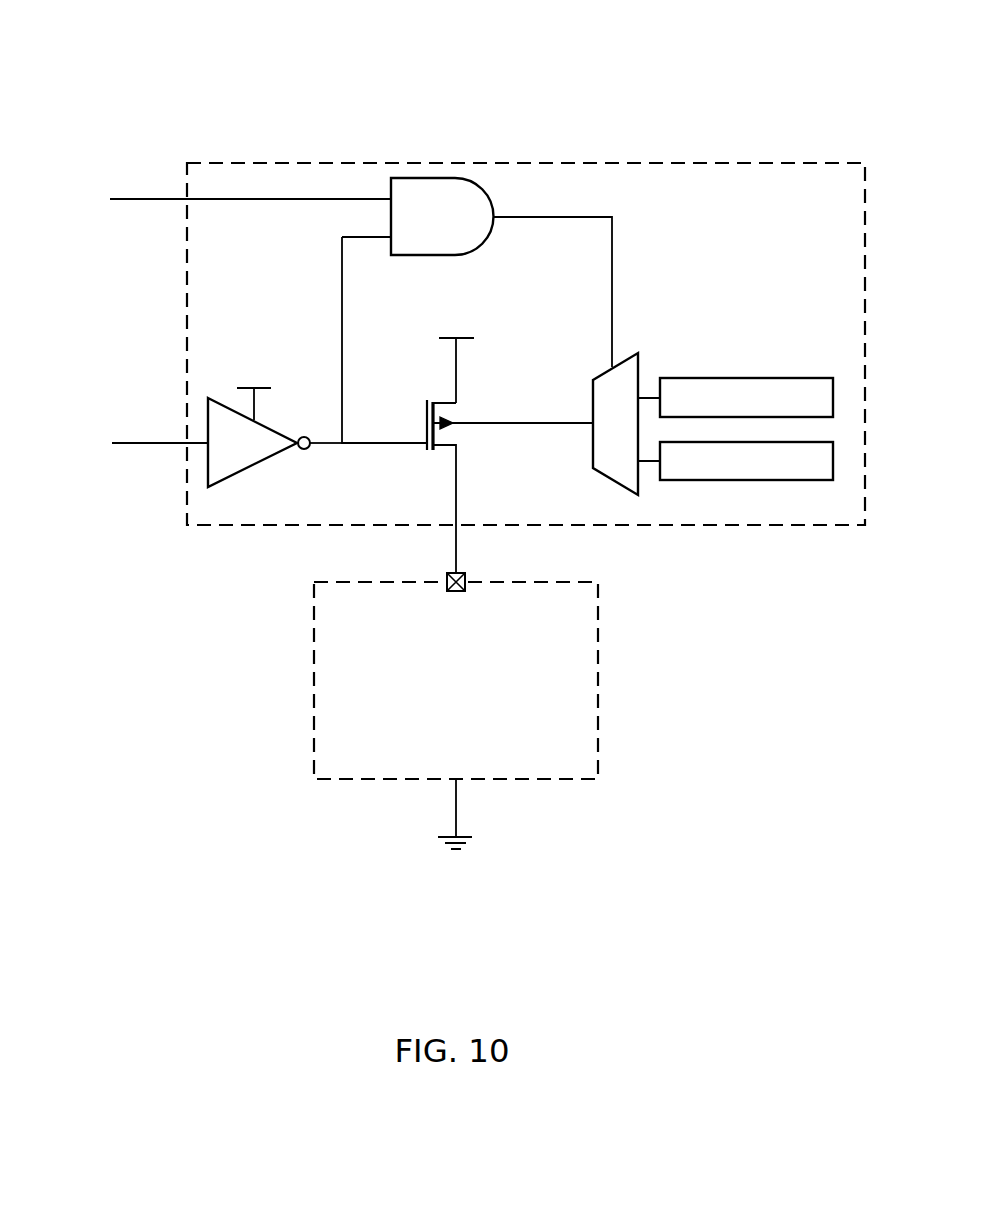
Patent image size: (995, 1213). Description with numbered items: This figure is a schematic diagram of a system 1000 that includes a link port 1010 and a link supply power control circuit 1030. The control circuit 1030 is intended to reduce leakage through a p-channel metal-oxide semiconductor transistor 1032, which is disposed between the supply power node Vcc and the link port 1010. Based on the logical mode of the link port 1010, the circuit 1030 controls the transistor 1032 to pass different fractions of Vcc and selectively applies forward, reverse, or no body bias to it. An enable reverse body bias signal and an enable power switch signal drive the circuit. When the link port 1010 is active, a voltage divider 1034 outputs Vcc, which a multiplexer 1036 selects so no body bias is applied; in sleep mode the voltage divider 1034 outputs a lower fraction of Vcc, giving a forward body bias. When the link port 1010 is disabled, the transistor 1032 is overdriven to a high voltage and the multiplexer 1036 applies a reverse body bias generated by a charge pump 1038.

The system 1000 is at (633, 48).
The link supply power control circuit 1030 is at (560, 162).
The p-channel metal-oxide semiconductor transistor 1032 is at (440, 398).
The multiplexer 1036 is at (600, 371).
The charge pump 1038 is at (745, 378).
The voltage divider 1034 is at (745, 481).
The link port 1010 is at (528, 581).